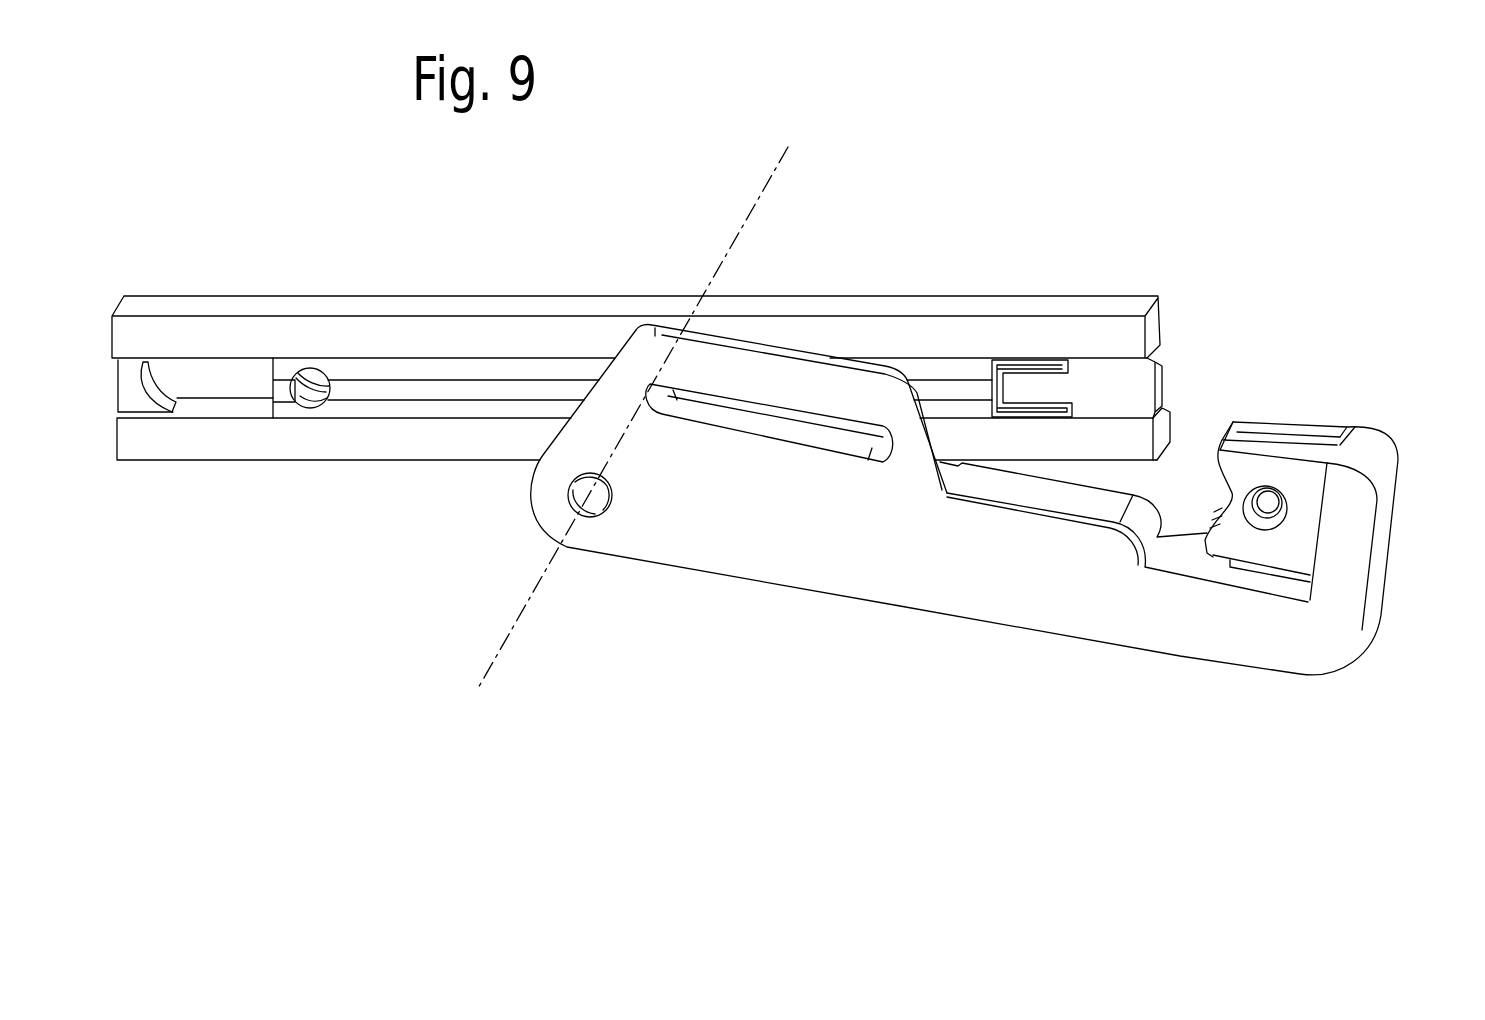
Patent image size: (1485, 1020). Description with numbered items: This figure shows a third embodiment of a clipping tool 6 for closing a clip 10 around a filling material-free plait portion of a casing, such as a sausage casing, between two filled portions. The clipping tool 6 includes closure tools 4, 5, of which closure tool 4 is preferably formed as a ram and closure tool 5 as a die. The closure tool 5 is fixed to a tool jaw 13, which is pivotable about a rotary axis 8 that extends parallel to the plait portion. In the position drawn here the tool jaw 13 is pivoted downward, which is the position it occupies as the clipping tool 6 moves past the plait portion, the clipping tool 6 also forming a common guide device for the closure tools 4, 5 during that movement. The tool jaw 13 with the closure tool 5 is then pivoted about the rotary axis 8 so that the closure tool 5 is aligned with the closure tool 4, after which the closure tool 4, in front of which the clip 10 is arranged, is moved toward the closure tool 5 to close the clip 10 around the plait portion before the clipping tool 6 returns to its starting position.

The closure tool 4 is at (940, 389).
The closure tool 5 is at (1240, 473).
The clipping tool 6 is at (901, 216).
The rotary axis 8 is at (493, 655).
The clip 10 is at (1031, 364).
The tool jaw 13 is at (1333, 593).